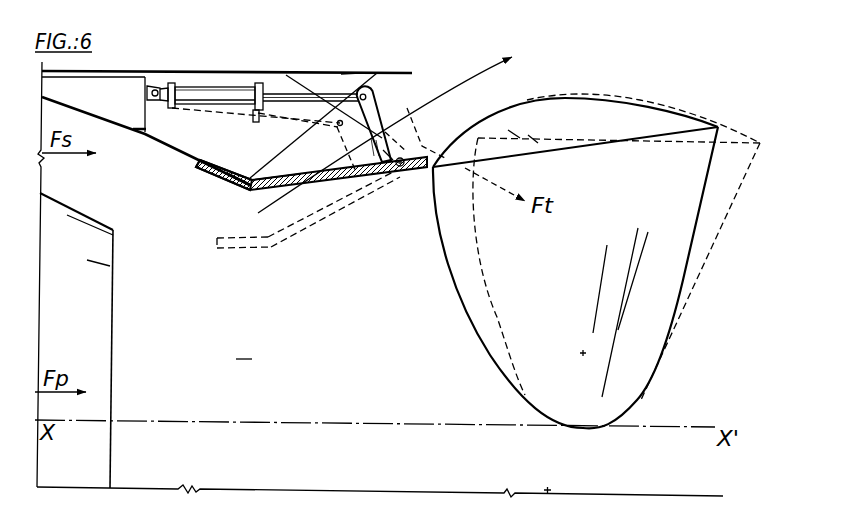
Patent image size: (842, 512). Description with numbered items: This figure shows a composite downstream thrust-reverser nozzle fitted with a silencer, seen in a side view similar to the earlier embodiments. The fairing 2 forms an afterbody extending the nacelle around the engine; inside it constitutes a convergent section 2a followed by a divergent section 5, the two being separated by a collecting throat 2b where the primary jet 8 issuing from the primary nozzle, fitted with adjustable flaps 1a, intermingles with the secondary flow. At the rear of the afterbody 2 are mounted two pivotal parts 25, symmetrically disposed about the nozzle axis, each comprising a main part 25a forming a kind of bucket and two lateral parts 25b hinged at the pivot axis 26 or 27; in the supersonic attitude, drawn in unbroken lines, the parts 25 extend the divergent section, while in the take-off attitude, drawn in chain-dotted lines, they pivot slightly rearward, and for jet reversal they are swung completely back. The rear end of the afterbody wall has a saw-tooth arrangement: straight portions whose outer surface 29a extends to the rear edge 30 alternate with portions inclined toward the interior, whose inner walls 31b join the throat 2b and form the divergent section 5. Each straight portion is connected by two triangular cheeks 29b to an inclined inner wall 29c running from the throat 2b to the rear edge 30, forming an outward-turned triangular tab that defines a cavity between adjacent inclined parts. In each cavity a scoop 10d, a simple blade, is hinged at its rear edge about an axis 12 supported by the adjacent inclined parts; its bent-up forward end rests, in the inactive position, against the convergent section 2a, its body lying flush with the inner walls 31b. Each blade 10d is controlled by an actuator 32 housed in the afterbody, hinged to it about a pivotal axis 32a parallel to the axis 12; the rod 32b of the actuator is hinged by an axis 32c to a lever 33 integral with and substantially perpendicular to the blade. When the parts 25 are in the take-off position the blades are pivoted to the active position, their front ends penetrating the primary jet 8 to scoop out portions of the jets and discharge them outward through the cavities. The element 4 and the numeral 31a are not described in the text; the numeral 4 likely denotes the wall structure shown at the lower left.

The adjustable flaps 1a is at (77, 218).
The fairing 2 is at (97, 70).
The convergent section 2a is at (168, 149).
The throat 2b is at (250, 181).
The vertical wall 4 is at (113, 350).
The divergent section 5 is at (338, 182).
The primary jet 8 is at (244, 348).
The scoops 10d is at (247, 185).
The axis 12 is at (408, 168).
The pivotal parts 25 is at (705, 188).
The main part 25a is at (523, 117).
The lateral parts 25b is at (619, 407).
The pivot axis 26 is at (568, 349).
The pivot axis 27 is at (549, 489).
The outer surface 29a is at (341, 74).
The triangular cheeks 29b is at (312, 82).
The inclined inner wall 29c is at (288, 154).
The rear edge 30 is at (375, 92).
The link a 31a is at (393, 147).
The inner walls 31b is at (263, 177).
The actuator 32 is at (190, 90).
The pivotal axis 32a is at (153, 84).
The rod 32b is at (266, 86).
The axis 32c is at (366, 84).
The lever 33 is at (380, 98).